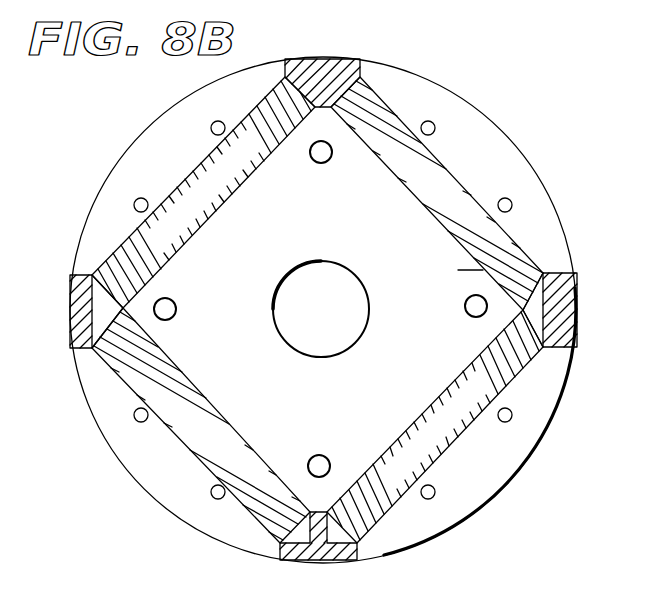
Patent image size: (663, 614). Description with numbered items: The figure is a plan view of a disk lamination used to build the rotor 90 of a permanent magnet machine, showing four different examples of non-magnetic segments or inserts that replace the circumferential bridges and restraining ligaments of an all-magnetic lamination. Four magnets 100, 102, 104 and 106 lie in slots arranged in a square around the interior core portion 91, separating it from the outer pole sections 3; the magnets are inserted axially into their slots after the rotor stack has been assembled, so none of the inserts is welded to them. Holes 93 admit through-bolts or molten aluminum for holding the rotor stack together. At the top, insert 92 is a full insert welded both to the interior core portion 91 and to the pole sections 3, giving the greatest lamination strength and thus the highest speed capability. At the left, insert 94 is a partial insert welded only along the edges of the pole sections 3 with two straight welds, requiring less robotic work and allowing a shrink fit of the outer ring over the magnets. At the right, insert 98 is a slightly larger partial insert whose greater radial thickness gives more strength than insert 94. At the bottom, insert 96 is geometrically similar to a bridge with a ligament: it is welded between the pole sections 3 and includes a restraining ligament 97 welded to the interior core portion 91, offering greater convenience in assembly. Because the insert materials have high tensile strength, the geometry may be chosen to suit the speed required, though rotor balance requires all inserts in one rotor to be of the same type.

The pole section 3 is at (148, 138).
The rotor 90 is at (60, 197).
The interior core portion 91 is at (493, 268).
The full insert 92 is at (313, 80).
The holes 93 is at (174, 301).
The partial insert 94 is at (73, 316).
The insert 96 is at (357, 550).
The restraining ligament 97 is at (313, 510).
The partial insert 98 is at (565, 297).
The magnet 100 is at (407, 187).
The magnet 102 is at (270, 147).
The magnet 104 is at (153, 372).
The magnet 106 is at (493, 362).